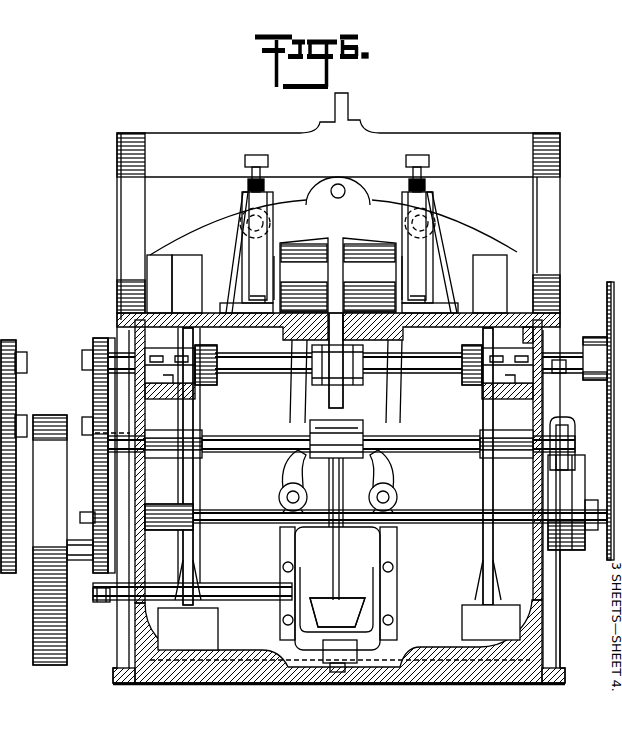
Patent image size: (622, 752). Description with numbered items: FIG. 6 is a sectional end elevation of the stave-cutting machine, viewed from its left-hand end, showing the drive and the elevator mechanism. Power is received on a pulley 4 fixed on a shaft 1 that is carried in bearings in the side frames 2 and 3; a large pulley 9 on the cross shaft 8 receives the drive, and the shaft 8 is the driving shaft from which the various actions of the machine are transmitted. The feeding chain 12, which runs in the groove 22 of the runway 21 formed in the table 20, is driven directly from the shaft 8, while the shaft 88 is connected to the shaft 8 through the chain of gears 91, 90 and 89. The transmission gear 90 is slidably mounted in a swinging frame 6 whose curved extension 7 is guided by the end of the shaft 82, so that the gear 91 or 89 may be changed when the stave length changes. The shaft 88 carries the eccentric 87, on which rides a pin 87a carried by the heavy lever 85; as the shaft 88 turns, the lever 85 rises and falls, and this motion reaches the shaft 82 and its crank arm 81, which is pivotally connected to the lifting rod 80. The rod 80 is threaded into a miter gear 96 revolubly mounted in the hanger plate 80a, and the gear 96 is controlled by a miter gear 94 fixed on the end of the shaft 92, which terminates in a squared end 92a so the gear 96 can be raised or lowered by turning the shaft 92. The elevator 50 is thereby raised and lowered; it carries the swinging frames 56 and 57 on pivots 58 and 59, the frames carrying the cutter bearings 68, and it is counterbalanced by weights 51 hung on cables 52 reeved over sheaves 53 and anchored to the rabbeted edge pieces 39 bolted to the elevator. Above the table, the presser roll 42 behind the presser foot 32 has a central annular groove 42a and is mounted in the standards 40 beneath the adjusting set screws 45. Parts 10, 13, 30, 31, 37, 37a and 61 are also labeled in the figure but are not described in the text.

The shaft 1 is at (590, 580).
The side frame 2 is at (560, 570).
The side frame 3 is at (0, 582).
The pulley 4 is at (48, 481).
The swinging frame 6 is at (108, 472).
The curved extension 7 is at (80, 562).
The cross shaft 8 is at (440, 376).
The large pulley 9 is at (607, 320).
The collar 10 is at (363, 352).
The feeding chain 12 is at (345, 362).
The vertical spindle 13 is at (343, 404).
The table 20 is at (462, 313).
The runway 21 is at (338, 275).
The groove 22 is at (300, 310).
The frame head 30 is at (192, 140).
The boss shoulder 31 is at (356, 124).
The presser foot 32 is at (348, 106).
The bearing housing 37 is at (270, 230).
The arched bracket 37a is at (245, 222).
The rabbeted edge piece 39 is at (150, 286).
The standard 40 is at (243, 254).
The presser roll 42 is at (360, 240).
The central annular groove 42a is at (330, 238).
The adjusting set screw 45 is at (268, 162).
The elevator 50 is at (419, 610).
The weight 51 is at (200, 622).
The cable 52 is at (200, 487).
The sheave 53 is at (135, 316).
The swinging frame 56 is at (404, 424).
The swinging frame 57 is at (216, 360).
The pivot 58 is at (358, 474).
The pivot 59 is at (281, 490).
The roller lever 61 is at (279, 493).
The bearing 68 is at (356, 465).
The lifting rod 80 is at (332, 548).
The hanger plate 80a is at (356, 672).
The crank arm 81 is at (336, 439).
The shaft 82 is at (232, 436).
The heavy lever 85 is at (575, 470).
The eccentric cam wheel 87 is at (578, 490).
The pin 87a is at (566, 428).
The shaft 88 is at (436, 510).
The connecting gear 89 is at (80, 512).
The transmission gear 90 is at (16, 404).
The gear 91 is at (10, 340).
The shaft 92 is at (262, 588).
The squared end 92a is at (99, 602).
The miter gear 94 is at (280, 612).
The miter gear 96 is at (352, 600).